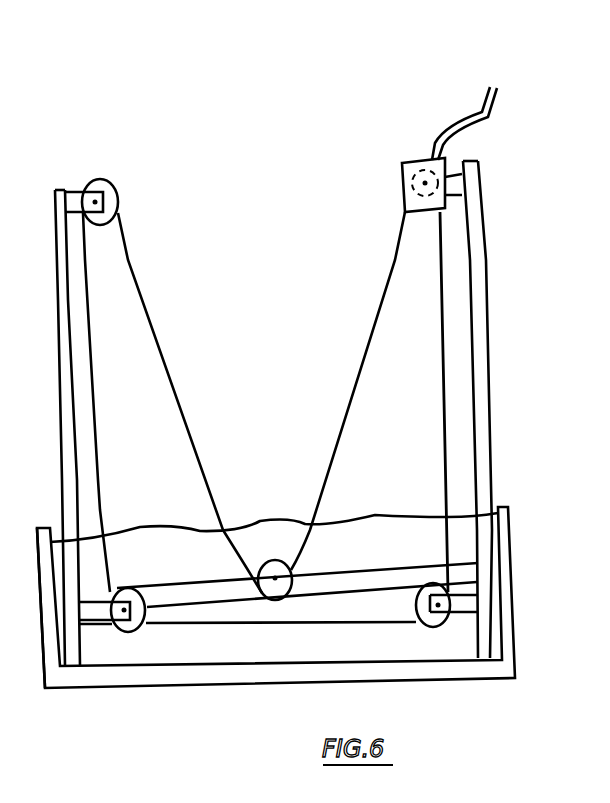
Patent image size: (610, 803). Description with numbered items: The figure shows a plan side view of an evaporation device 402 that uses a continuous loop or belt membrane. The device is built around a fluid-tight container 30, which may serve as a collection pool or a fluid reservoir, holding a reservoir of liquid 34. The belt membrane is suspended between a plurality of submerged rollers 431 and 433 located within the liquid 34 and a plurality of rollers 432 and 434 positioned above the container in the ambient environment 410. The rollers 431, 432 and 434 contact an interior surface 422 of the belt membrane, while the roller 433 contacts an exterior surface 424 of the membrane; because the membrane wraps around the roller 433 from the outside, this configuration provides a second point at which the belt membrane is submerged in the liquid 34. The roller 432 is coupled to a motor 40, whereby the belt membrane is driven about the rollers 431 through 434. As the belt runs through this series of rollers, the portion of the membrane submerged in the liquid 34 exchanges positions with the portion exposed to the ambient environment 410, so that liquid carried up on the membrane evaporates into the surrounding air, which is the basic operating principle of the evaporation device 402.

The container 30 is at (515, 638).
The liquid 34 is at (385, 520).
The motor 40 is at (448, 160).
The evaporation device 402 is at (304, 384).
The ambient environment 410 is at (279, 301).
The interior surface 422 is at (442, 315).
The exterior surface 424 is at (442, 282).
The submerged roller 431 is at (147, 620).
The roller 432 is at (405, 158).
The submerged roller 433 is at (265, 560).
The roller 434 is at (100, 177).